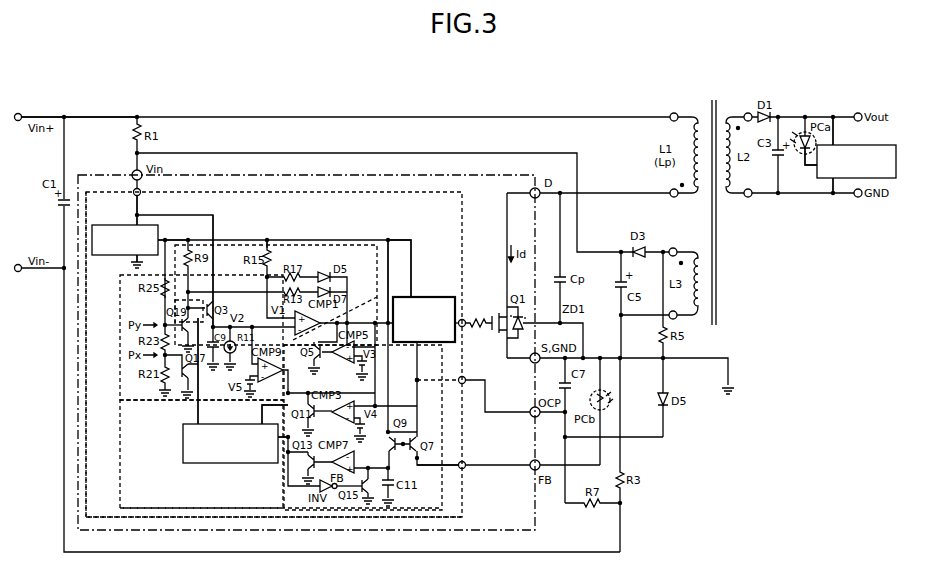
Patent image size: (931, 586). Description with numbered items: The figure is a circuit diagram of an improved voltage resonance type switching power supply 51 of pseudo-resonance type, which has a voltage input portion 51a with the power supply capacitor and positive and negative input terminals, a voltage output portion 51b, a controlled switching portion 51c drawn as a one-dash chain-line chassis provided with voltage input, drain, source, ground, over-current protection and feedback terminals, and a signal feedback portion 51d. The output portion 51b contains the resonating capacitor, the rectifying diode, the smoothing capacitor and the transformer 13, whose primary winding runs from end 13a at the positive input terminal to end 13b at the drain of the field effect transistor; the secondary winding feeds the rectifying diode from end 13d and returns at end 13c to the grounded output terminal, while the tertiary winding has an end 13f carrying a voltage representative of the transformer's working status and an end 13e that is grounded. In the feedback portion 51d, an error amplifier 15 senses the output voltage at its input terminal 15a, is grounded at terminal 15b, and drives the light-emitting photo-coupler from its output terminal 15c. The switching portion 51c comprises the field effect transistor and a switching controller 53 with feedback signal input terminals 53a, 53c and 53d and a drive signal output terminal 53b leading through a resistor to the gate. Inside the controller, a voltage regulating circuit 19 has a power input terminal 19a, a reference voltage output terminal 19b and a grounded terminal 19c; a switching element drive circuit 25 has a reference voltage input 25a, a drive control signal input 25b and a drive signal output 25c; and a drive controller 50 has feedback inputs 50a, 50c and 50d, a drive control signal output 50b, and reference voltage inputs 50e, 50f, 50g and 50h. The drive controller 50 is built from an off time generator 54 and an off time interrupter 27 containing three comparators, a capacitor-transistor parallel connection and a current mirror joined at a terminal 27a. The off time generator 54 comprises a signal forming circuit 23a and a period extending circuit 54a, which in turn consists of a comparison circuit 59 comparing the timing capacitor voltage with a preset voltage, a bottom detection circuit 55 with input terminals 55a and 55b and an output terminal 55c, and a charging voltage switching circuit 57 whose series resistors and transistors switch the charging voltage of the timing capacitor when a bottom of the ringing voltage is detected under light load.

The switching power supply 51 is at (575, 93).
The voltage input portion 51a is at (80, 116).
The voltage output portion 51b is at (818, 101).
The controlled switching portion 51c is at (229, 171).
The signal feedback portion 51d is at (663, 457).
The output transformer 13 is at (718, 102).
The primary winding end 13a is at (673, 112).
The primary winding end 13b is at (671, 197).
The secondary winding end 13c is at (750, 198).
The secondary winding end 13d is at (749, 112).
The tertiary winding end 13e is at (677, 319).
The tertiary winding end 13f is at (672, 248).
The error amplifier 15 is at (880, 144).
The error amplifier input terminal 15a is at (834, 114).
The error amplifier ground terminal 15b is at (834, 197).
The error amplifier output terminal 15c is at (811, 168).
The voltage regulating circuit 19 is at (112, 226).
The power input terminal 19a is at (136, 218).
The reference voltage output terminal 19b is at (167, 238).
The grounded terminal 19c is at (130, 262).
The signal forming circuit 23a is at (222, 241).
The switching element drive circuit 25 is at (428, 297).
The reference voltage input terminal 25a is at (411, 262).
The drive control signal input terminal 25b is at (394, 297).
The switching element drive signal output terminal 25c is at (462, 318).
The off time interrupter 27 is at (297, 510).
The terminal 27a is at (405, 480).
The drive controller 50 is at (316, 245).
The feedback signal input terminal 50a is at (141, 194).
The drive control signal output terminal 50b is at (384, 250).
The feedback signal input terminal 50c is at (422, 463).
The feedback signal input terminal 50d is at (389, 382).
The reference voltage input terminal 50e is at (213, 216).
The reference voltage input terminal 50f is at (267, 240).
The reference voltage input terminal 50g is at (388, 238).
The reference voltage input terminal 50h is at (122, 278).
The switching controller 53 is at (463, 225).
The feedback signal input terminal 53a is at (133, 190).
The switching element drive signal output terminal 53b is at (465, 328).
The feedback signal input terminal 53c is at (464, 462).
The feedback signal input terminal 53d is at (464, 378).
The off time generator 54 is at (203, 516).
The period extending circuit 54a is at (138, 518).
The bottom detection circuit 55 is at (198, 464).
The input terminal 55a is at (280, 464).
The input terminal 55b is at (262, 405).
The output terminal 55c is at (198, 401).
The charging voltage switching circuit 57 is at (138, 408).
The comparison circuit 59 is at (198, 410).